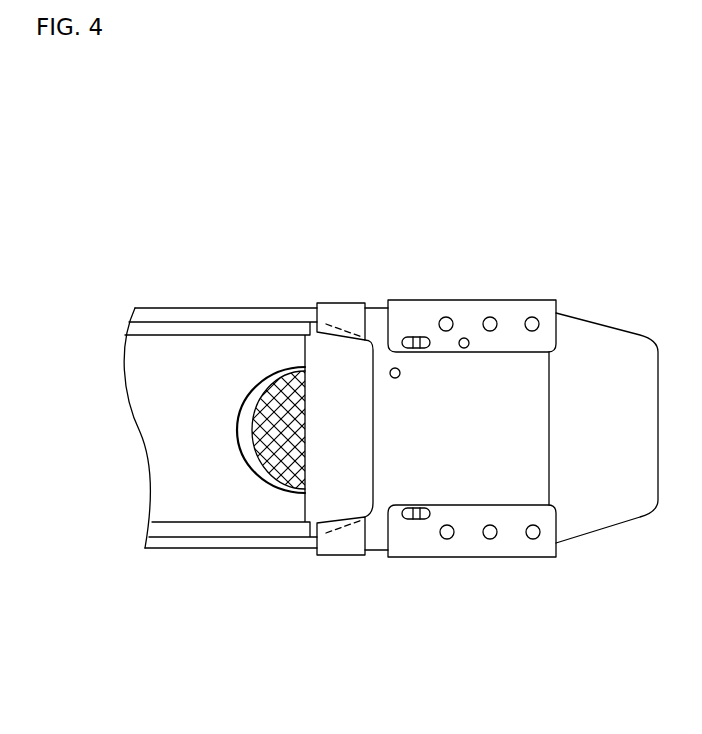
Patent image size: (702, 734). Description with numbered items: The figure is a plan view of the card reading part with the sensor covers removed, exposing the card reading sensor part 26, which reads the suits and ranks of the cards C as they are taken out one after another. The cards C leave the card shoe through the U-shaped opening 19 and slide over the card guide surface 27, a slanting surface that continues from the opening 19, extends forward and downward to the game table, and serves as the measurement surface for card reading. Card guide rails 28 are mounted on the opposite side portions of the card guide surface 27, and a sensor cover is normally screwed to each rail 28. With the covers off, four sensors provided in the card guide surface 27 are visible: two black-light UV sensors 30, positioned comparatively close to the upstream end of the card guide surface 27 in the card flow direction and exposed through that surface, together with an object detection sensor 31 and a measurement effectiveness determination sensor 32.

The card reading sensor part 26 is at (494, 383).
The card guide surface 27 is at (472, 440).
The card guide rails 28 is at (513, 312).
The black-light sensors 30 is at (420, 337).
The object detection sensor 31 is at (391, 368).
The measurement effectiveness determination sensor 32 is at (463, 338).
The opening 19 is at (243, 444).
The cards C is at (282, 398).